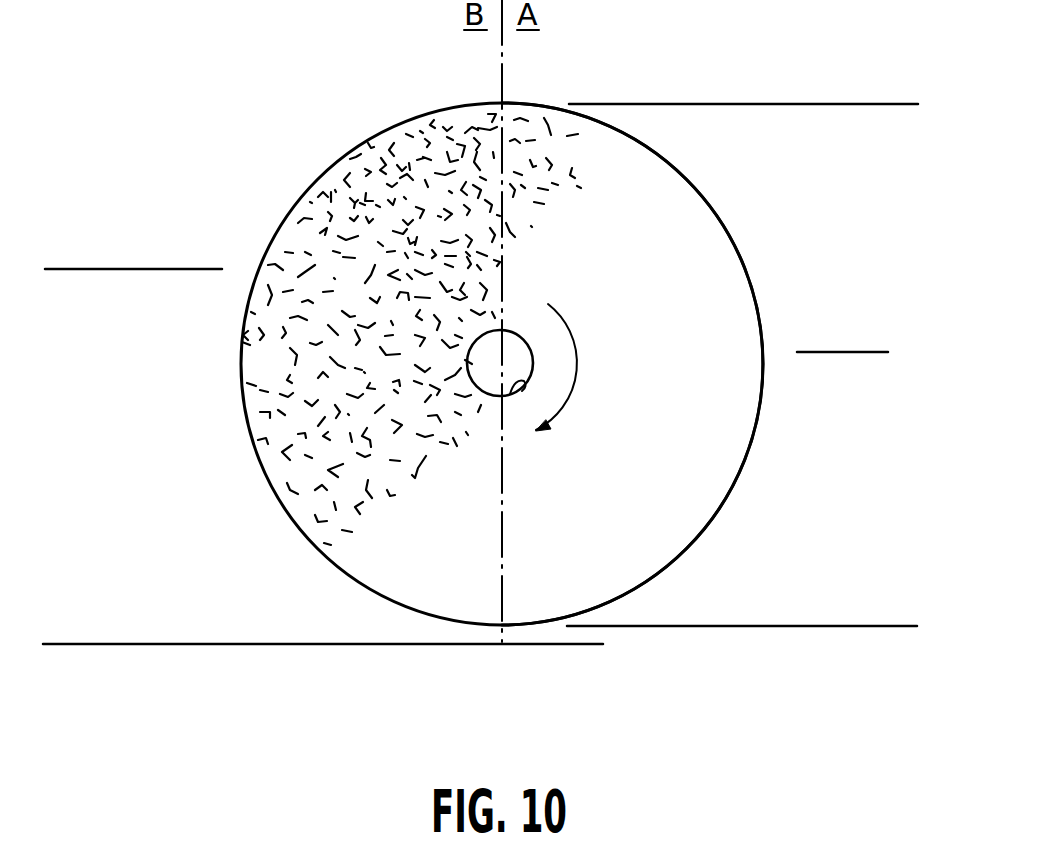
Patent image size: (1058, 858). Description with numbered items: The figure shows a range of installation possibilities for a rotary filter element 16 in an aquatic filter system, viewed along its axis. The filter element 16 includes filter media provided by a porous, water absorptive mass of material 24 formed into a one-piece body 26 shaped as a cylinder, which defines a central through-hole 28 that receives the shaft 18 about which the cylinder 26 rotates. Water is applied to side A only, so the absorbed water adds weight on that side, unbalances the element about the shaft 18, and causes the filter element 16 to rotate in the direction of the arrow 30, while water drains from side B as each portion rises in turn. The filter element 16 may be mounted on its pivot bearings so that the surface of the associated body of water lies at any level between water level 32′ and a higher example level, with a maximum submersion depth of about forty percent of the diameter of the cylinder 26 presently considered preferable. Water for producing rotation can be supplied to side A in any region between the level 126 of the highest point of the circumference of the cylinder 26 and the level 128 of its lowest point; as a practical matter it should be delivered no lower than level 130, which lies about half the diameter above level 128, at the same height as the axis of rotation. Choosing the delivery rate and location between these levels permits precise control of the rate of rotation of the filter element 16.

The rotary filter element 16 is at (363, 140).
The shaft 18 is at (510, 347).
The porous, water absorptive mass of material 24 is at (267, 372).
The one-piece body 26 is at (668, 178).
The central through-hole 28 is at (512, 395).
The arrow 30 is at (580, 373).
The water level 32′ is at (130, 644).
The level of the highest point of the circumference 126 is at (755, 104).
The level of the lowest point of the circumference 128 is at (797, 626).
The level 130 is at (823, 352).